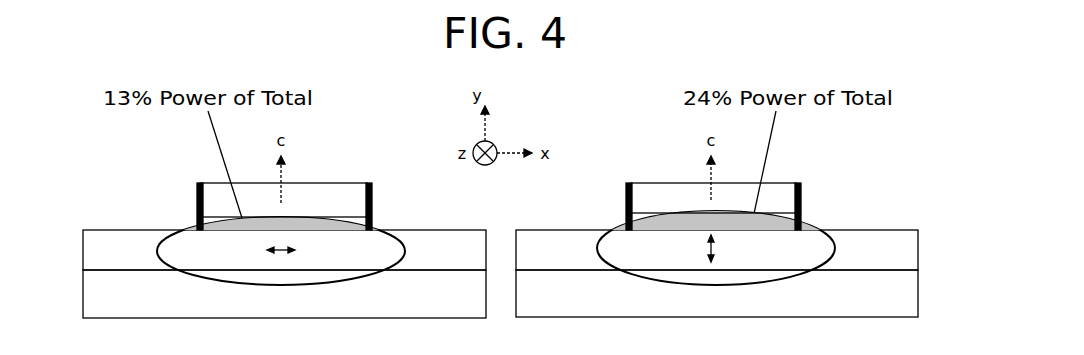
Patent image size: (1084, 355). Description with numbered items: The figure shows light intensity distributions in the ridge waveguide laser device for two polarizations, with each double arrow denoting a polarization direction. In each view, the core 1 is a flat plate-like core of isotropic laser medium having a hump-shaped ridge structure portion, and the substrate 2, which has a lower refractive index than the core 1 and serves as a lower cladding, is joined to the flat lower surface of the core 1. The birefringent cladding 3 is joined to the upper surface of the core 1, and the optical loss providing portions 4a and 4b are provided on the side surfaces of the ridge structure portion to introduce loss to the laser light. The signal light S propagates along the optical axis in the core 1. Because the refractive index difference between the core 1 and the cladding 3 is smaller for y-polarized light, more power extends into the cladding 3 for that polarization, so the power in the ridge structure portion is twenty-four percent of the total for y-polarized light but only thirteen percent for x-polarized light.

The core 1 is at (100, 257).
The substrate 2 is at (100, 301).
The cladding 3 is at (217, 207).
The optical loss providing portion 4a is at (197, 188).
The optical loss providing portion 4b is at (372, 190).
The signal light S is at (405, 248).